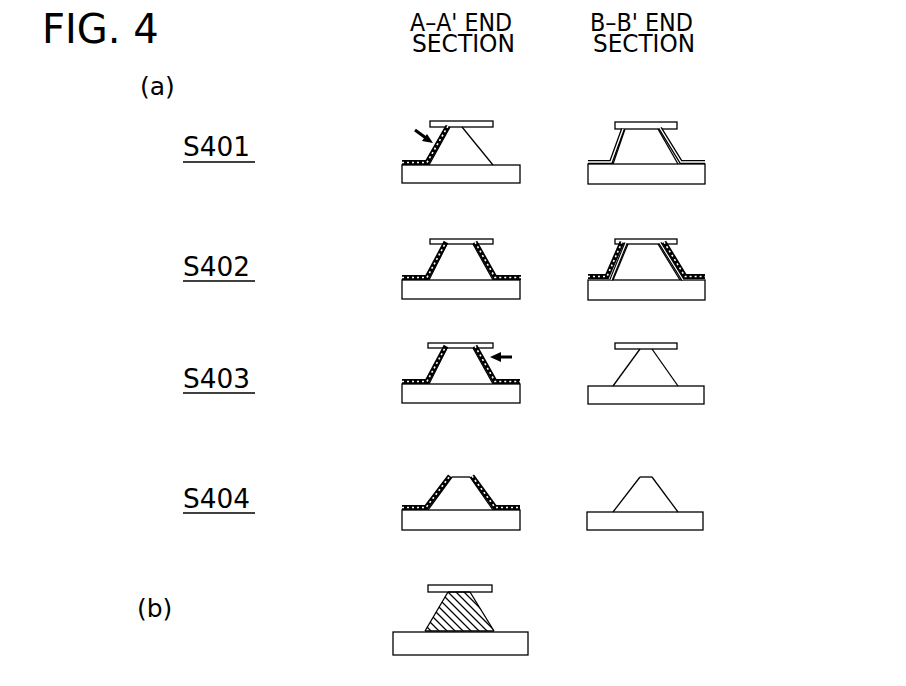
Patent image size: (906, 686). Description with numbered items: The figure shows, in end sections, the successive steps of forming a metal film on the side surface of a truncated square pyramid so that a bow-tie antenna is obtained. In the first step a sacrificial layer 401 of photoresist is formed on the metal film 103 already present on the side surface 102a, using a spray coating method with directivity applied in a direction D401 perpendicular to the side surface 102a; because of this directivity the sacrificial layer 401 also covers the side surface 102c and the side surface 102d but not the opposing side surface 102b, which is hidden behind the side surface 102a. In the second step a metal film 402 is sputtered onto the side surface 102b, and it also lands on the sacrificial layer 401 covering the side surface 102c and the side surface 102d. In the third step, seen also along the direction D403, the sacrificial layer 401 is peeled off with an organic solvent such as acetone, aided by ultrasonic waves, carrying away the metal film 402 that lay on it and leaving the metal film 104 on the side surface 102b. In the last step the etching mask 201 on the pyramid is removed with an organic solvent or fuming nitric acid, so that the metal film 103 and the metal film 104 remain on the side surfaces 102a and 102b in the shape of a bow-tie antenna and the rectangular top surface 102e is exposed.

The etching mask 201 is at (460, 120).
The sacrificial layer 401 is at (427, 152).
The metal film 402 is at (490, 265).
The metal film 103 is at (440, 158).
The metal film 104 is at (490, 368).
The side surface 102a is at (462, 135).
The side surface 102b is at (487, 152).
The side surface 102c is at (627, 157).
The side surface 102d is at (663, 157).
The top surface 102e is at (460, 477).
The direction D401 is at (390, 127).
The direction D403 is at (533, 357).